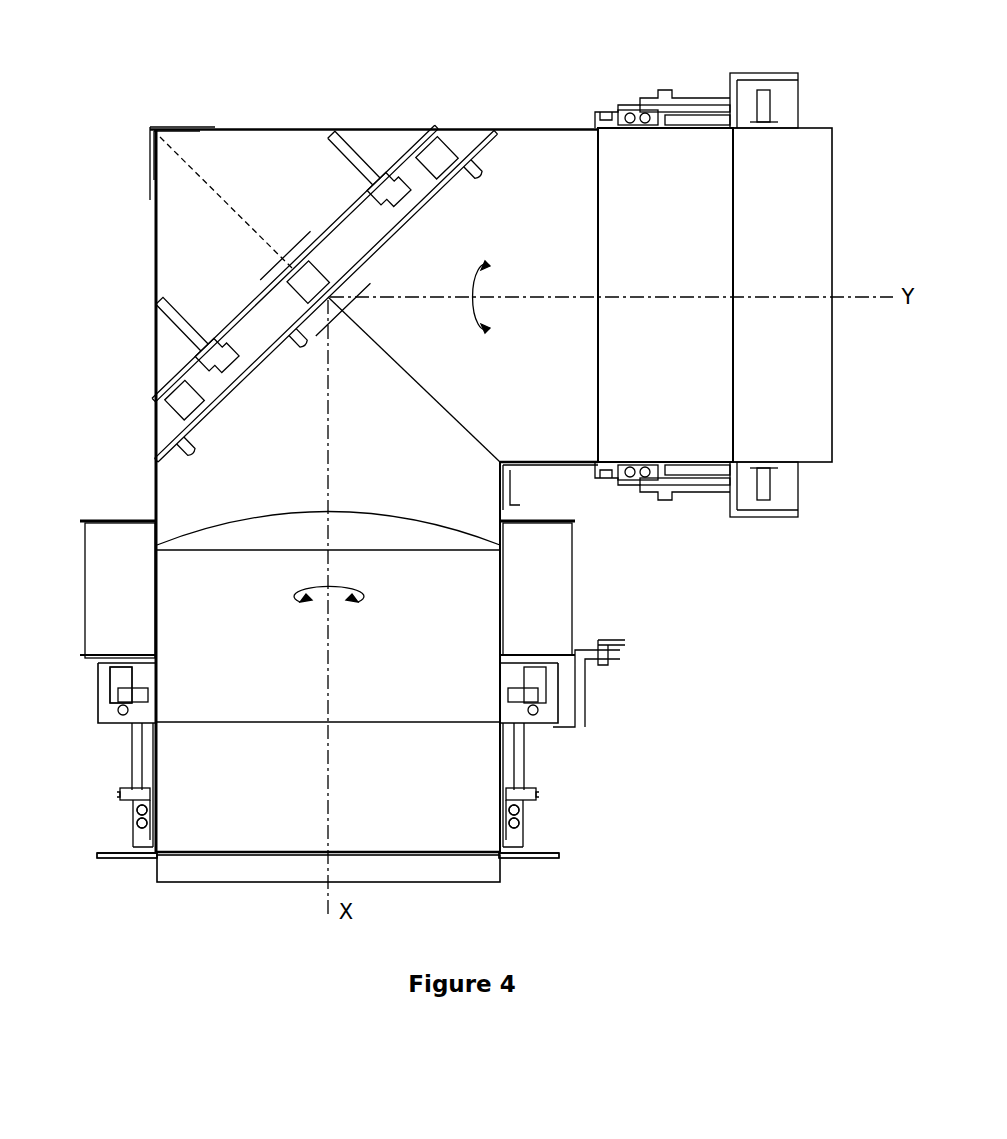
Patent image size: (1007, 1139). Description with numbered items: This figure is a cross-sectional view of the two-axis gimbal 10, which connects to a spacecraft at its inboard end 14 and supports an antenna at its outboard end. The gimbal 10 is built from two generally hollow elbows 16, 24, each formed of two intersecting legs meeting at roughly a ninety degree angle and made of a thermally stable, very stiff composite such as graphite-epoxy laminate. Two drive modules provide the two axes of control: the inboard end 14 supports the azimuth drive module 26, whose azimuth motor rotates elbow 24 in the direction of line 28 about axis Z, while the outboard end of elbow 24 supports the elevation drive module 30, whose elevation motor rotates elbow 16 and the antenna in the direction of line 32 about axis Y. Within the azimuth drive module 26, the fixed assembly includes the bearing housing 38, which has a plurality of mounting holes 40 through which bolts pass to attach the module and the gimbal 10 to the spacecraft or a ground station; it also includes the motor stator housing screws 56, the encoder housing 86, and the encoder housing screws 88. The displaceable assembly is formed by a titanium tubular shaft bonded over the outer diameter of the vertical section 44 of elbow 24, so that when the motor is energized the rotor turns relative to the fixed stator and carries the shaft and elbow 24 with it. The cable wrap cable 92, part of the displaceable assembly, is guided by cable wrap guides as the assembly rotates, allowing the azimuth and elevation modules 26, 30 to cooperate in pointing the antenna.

The two-axis gimbal 10 is at (112, 212).
The inboard end 14 is at (250, 882).
The elbow 16 is at (533, 128).
The elbow 24 is at (263, 140).
The azimuth drive module 26 is at (65, 640).
The direction of rotation line 28 is at (362, 600).
The elevation drive module 30 is at (624, 104).
The direction of rotation line 32 is at (490, 330).
The bearing housing 38 is at (118, 858).
The mounting holes 40 is at (120, 853).
The vertical section 44 is at (155, 487).
The motor stator housing screws 56 is at (125, 792).
The encoder housing 86 is at (98, 702).
The encoder housing screws 88 is at (103, 728).
The cable wrap cable 92 is at (555, 594).